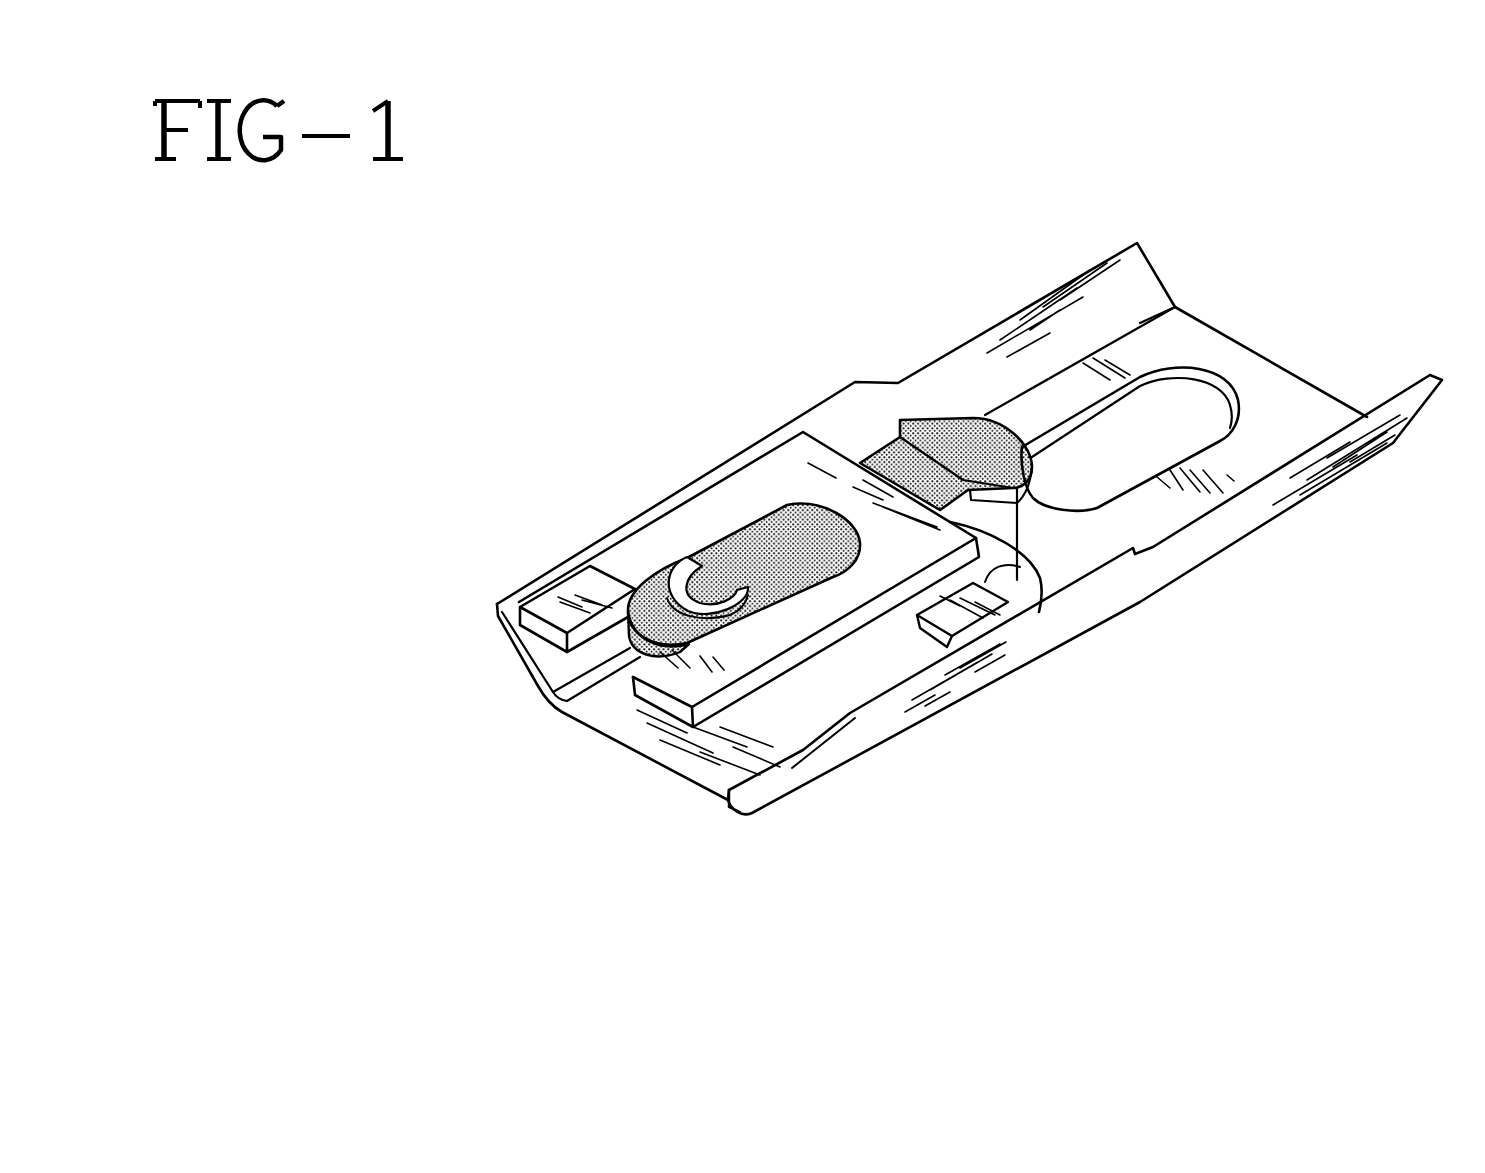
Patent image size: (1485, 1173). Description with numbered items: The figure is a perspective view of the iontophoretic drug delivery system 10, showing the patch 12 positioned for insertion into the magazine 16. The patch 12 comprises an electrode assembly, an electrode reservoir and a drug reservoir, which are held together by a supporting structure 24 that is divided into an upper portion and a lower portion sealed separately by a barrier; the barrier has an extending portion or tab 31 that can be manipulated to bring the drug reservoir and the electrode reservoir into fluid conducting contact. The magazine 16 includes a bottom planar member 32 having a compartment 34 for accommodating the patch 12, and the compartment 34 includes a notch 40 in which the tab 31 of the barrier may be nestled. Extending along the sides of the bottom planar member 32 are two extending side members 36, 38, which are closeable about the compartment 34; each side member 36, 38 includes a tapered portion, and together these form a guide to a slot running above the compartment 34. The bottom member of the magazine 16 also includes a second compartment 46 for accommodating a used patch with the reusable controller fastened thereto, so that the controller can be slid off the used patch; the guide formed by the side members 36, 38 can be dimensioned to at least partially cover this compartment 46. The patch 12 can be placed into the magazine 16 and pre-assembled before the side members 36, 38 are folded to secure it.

The iontophoretic drug delivery system 10 is at (883, 276).
The patch 12 is at (653, 610).
The magazine 16 is at (1272, 413).
The supporting structure 24 is at (722, 513).
The tab 31 is at (940, 428).
The bottom planar member 32 is at (1175, 330).
The compartment 34 is at (693, 747).
The extending side member 36 is at (902, 713).
The extending side member 38 is at (838, 422).
The notch 40 is at (1042, 592).
The compartment 46 is at (1182, 407).